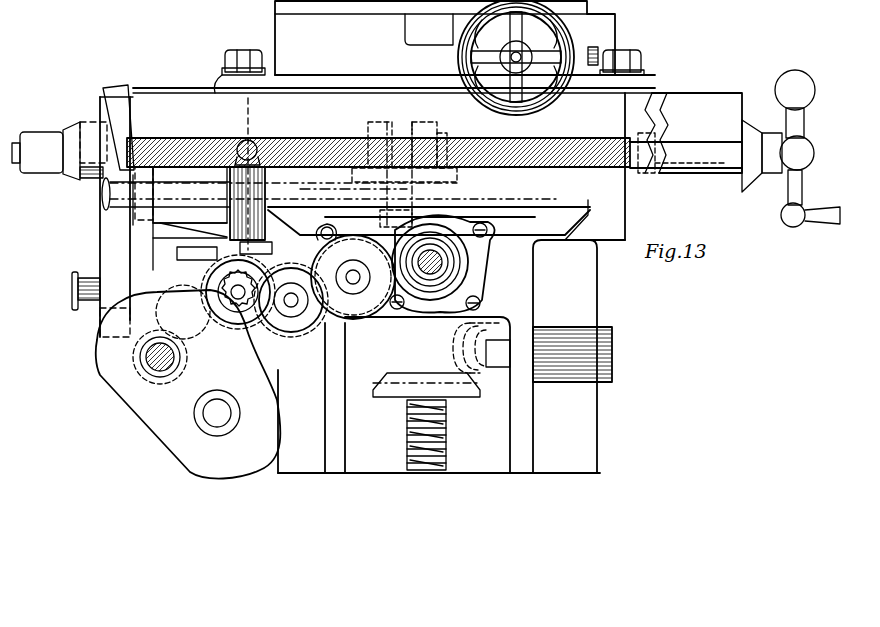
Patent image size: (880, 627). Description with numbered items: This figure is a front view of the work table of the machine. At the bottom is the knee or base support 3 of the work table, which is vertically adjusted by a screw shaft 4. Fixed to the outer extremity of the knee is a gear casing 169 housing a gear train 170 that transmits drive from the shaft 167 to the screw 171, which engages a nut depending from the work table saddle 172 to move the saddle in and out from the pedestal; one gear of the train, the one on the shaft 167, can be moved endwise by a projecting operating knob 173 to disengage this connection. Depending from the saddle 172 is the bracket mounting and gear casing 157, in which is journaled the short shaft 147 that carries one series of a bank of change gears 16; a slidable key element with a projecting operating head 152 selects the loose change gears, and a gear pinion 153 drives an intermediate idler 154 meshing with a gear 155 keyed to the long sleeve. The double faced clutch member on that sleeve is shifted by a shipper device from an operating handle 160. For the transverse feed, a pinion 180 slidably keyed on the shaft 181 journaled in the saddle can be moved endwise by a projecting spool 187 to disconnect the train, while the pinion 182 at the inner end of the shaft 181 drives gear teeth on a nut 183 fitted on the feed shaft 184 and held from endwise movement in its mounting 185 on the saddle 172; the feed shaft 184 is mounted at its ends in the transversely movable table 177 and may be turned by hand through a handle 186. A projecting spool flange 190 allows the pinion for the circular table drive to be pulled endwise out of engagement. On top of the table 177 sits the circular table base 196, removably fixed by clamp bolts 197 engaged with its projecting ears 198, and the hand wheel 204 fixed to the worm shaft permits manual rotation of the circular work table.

The circular table base 196 is at (275, 30).
The clamp bolts 197 is at (240, 58).
The projecting ears 198 is at (237, 86).
The bank of change gears 16 is at (256, 108).
The operating handle 160 is at (250, 141).
The feed shaft 184 is at (313, 145).
The mounting 185 is at (380, 130).
The nut 183 is at (408, 133).
The pinion 182 is at (407, 188).
The hand wheel 204 is at (543, 97).
The transversely movable table 177 is at (697, 107).
The work table saddle 172 is at (628, 200).
The handle 186 is at (790, 218).
The projecting spool 187 is at (102, 207).
The pinion 180 is at (127, 212).
The shaft 181 is at (192, 200).
The projecting operating knob 173 is at (238, 290).
The shaft 167 is at (220, 283).
The projecting spool flange 190 is at (82, 305).
The intermediate idler 154 is at (197, 337).
The gear 155 is at (237, 330).
The projecting operating head 152 is at (157, 360).
The gear pinion 153 is at (153, 378).
The bracket mounting and gear casing 157 is at (208, 425).
The short shaft 147 is at (213, 415).
The gear train 170 is at (292, 330).
The gear casing 169 is at (363, 323).
The screw 171 is at (442, 263).
The screw shaft 4 is at (430, 447).
The knee or base support 3 is at (572, 356).